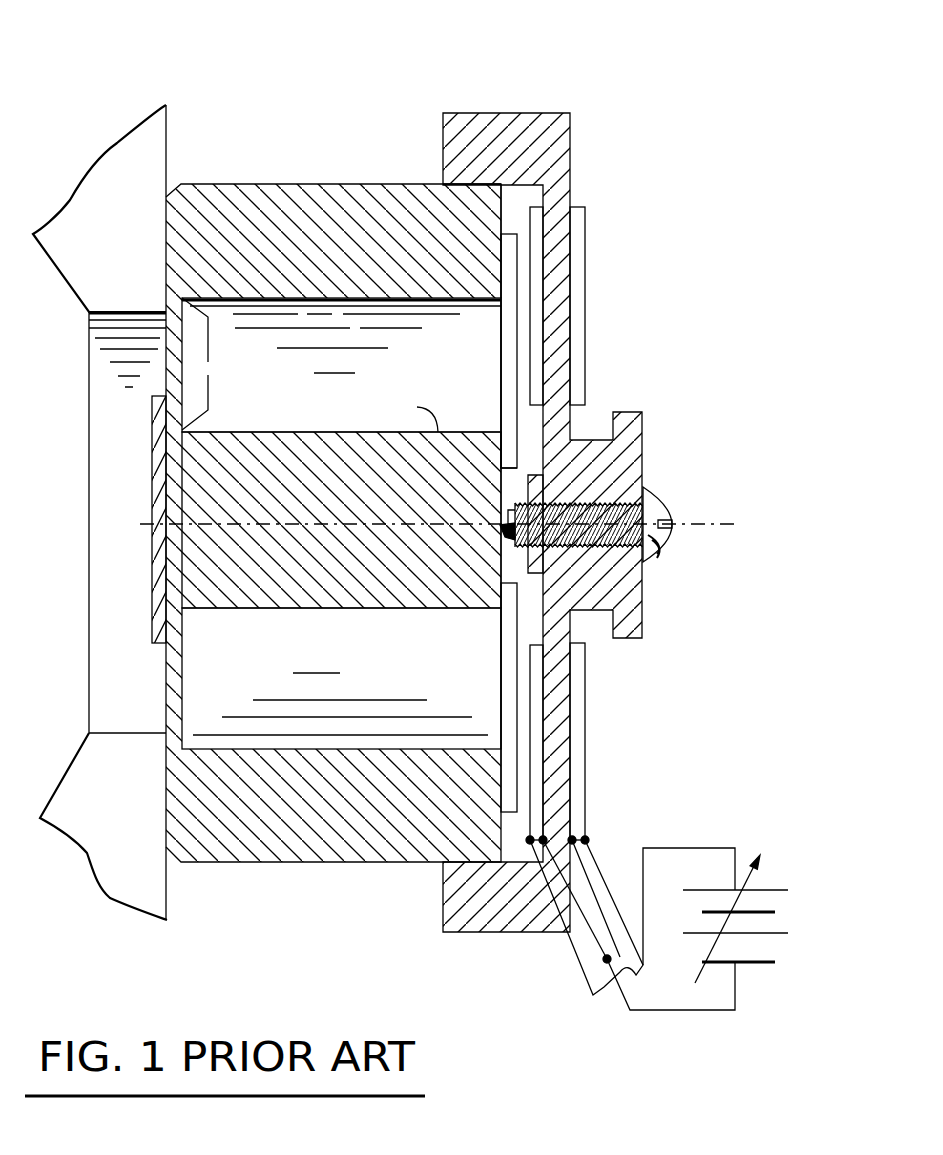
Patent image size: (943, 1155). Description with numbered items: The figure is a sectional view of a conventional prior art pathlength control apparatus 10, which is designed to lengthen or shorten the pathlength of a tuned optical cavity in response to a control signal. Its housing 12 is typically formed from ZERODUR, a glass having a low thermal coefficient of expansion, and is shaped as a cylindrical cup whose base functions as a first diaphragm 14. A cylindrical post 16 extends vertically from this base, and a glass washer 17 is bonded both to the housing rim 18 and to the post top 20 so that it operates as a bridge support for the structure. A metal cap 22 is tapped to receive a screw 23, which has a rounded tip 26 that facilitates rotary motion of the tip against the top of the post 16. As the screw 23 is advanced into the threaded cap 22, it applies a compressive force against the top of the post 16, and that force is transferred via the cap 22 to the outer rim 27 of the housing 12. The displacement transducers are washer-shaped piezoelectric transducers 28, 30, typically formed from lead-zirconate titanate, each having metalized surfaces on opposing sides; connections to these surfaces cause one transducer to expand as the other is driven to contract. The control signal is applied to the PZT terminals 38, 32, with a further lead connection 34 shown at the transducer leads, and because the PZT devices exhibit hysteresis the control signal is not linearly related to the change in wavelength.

The pathlength control apparatus 10 is at (288, 118).
The housing 12 is at (255, 184).
The first diaphragm 14 is at (208, 362).
The cylindrical post 16 is at (358, 553).
The glass washer 17 is at (503, 340).
The housing rim 18 is at (500, 272).
The post top 20 is at (501, 440).
The metal cap 22 is at (517, 127).
The screw 23 is at (667, 505).
The rounded tip 26 is at (506, 537).
The outer rim 27 is at (452, 186).
The piezoelectric transducer 28 is at (533, 230).
The piezoelectric transducer 30 is at (582, 267).
The PZT terminal 32 is at (528, 838).
The lead terminal 34 is at (543, 838).
The PZT terminal 38 is at (585, 838).